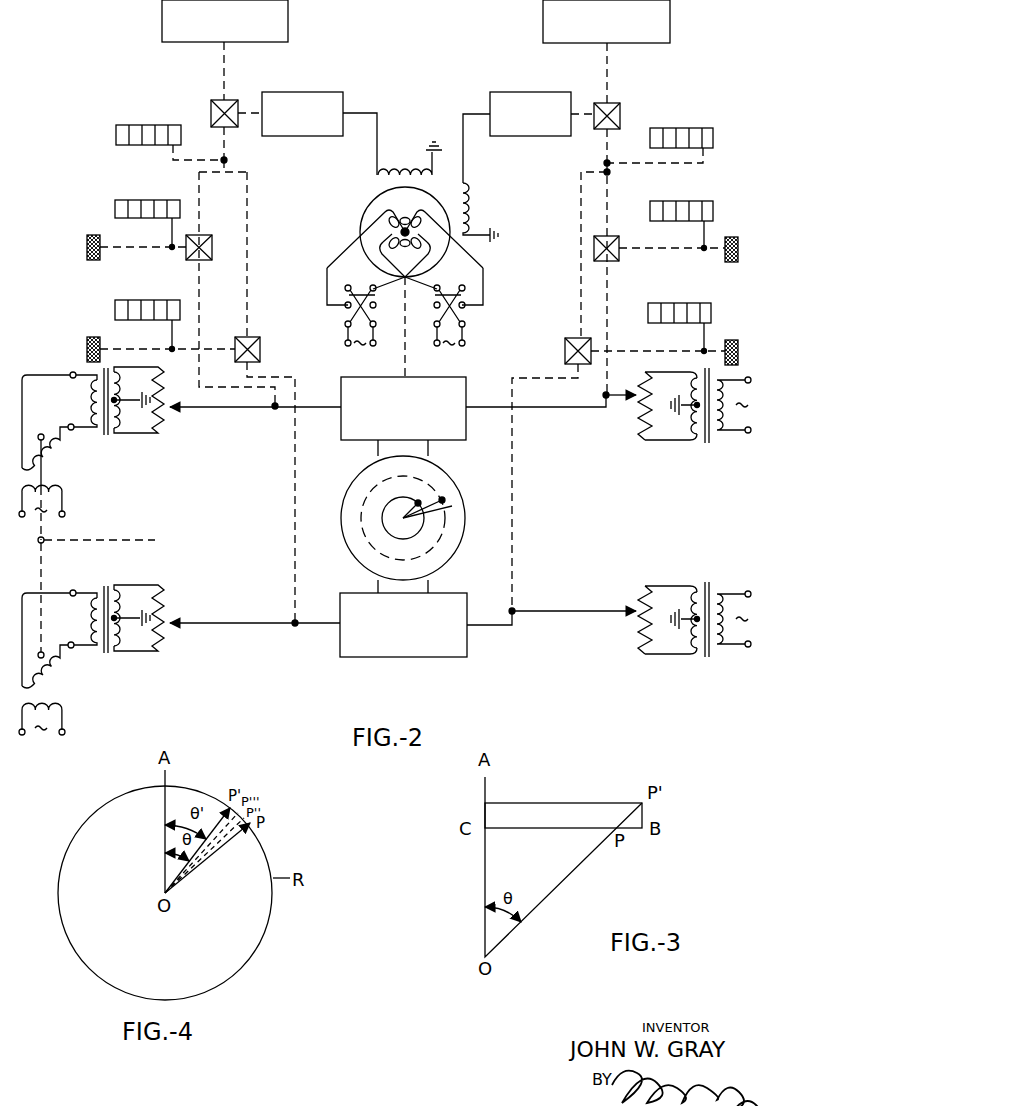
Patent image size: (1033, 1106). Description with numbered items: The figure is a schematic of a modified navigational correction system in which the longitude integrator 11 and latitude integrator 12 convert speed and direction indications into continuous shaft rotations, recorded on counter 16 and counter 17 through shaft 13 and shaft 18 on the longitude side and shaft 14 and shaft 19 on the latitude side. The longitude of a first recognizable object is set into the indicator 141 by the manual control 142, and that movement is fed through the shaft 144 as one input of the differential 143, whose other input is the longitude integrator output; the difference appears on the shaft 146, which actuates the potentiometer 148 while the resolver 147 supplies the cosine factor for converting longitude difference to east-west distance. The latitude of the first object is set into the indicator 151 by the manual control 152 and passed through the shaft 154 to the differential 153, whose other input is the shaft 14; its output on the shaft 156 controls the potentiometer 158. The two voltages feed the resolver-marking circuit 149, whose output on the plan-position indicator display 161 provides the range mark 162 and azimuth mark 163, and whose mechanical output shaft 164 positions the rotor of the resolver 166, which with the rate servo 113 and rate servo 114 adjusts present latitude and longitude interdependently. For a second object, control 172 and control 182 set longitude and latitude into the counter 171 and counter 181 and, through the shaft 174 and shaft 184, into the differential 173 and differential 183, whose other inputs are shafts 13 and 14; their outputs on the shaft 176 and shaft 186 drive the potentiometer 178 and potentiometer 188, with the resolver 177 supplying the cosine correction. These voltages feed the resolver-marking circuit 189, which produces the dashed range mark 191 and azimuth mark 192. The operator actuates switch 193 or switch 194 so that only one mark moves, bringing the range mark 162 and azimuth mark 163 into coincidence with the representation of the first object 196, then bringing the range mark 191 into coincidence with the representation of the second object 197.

The longitude integrator 11 is at (290, 19).
The latitude integrator 12 is at (543, 19).
The shaft 13 is at (225, 68).
The shaft 14 is at (607, 70).
The counter 16 is at (116, 127).
The counter 17 is at (713, 130).
The shaft 18 is at (188, 162).
The shaft 19 is at (657, 165).
The rate servo 113 is at (512, 92).
The rate servo 114 is at (343, 92).
The indicator 141 is at (115, 203).
The manual control 142 is at (87, 248).
The differential 143 is at (207, 238).
The shaft 144 is at (135, 247).
The shaft 146 is at (200, 283).
The resolver 147 is at (108, 484).
The potentiometer 148 is at (160, 428).
The resolver-marking circuit 149 is at (466, 425).
The indicator 151 is at (713, 208).
The manual control 152 is at (738, 248).
The differential 153 is at (615, 260).
The shaft 154 is at (638, 248).
The shaft 156 is at (607, 292).
The potentiometer 158 is at (634, 418).
The plan-position indicator display 161 is at (362, 472).
The range mark 162 is at (418, 533).
The azimuth mark 163 is at (418, 503).
The shaft 164 is at (405, 358).
The resolver 166 is at (360, 213).
The counter 171 is at (115, 303).
The control 172 is at (87, 349).
The differential 173 is at (260, 349).
The shaft 174 is at (160, 347).
The shaft 176 is at (280, 376).
The resolver 177 is at (61, 639).
The potentiometer 178 is at (138, 620).
The counter 181 is at (711, 309).
The control 182 is at (738, 346).
The differential 183 is at (565, 351).
The shaft 184 is at (662, 349).
The shaft 186 is at (512, 402).
The potentiometer 188 is at (667, 619).
The resolver-marking circuit 189 is at (467, 657).
The range mark 191 is at (443, 533).
The azimuth mark 192 is at (452, 506).
The switch 193 is at (331, 330).
The switch 194 is at (514, 330).
The representation of the first recognizable object 196 is at (415, 500).
The representation of the second recognizable object 197 is at (442, 500).